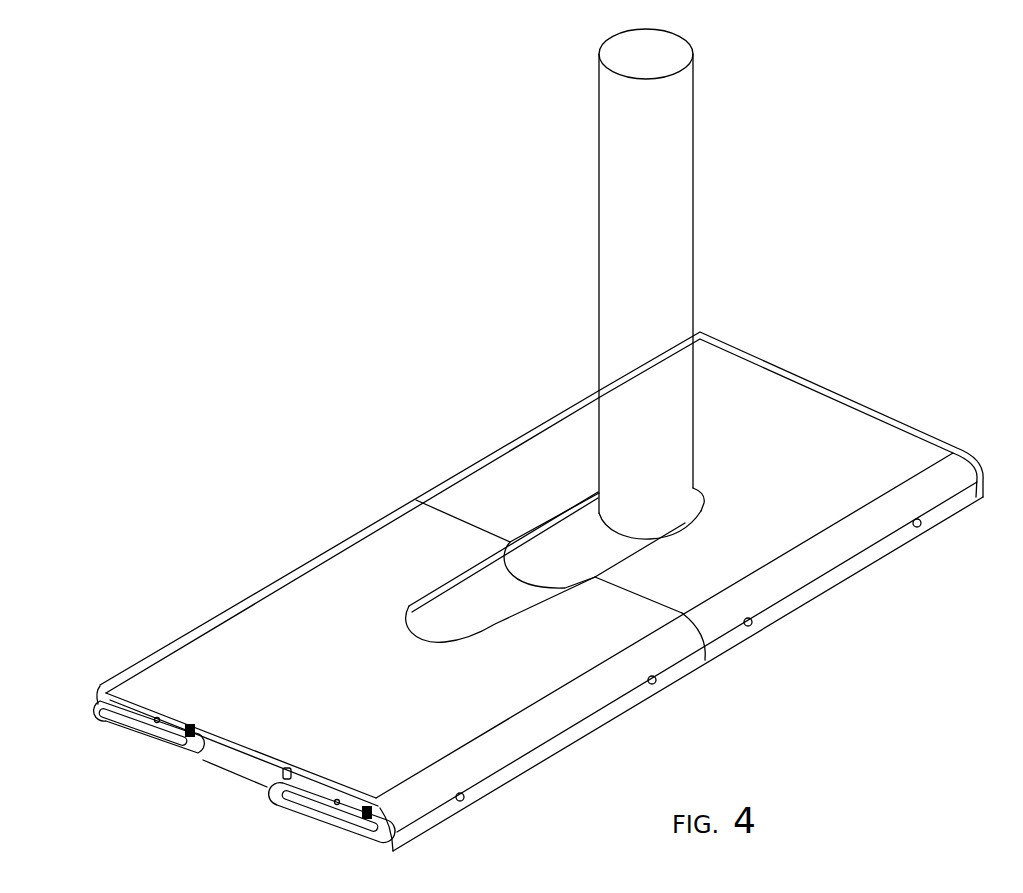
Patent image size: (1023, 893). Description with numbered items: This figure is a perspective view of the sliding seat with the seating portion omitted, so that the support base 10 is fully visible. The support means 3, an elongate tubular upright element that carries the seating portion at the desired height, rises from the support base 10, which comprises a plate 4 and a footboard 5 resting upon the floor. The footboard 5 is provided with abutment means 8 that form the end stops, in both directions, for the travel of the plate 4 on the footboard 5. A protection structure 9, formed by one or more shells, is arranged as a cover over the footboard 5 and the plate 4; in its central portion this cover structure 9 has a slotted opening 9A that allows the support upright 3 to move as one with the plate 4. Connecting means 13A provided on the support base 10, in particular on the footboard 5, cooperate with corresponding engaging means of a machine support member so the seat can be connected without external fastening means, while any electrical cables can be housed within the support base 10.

The support means 3 is at (677, 177).
The plate 4 is at (563, 552).
The footboard 5 is at (237, 757).
The abutment means 8 is at (102, 693).
The protection structure 9 is at (304, 590).
The slotted opening 9A is at (451, 572).
The support base 10 is at (197, 598).
The connecting means 13A is at (150, 730).